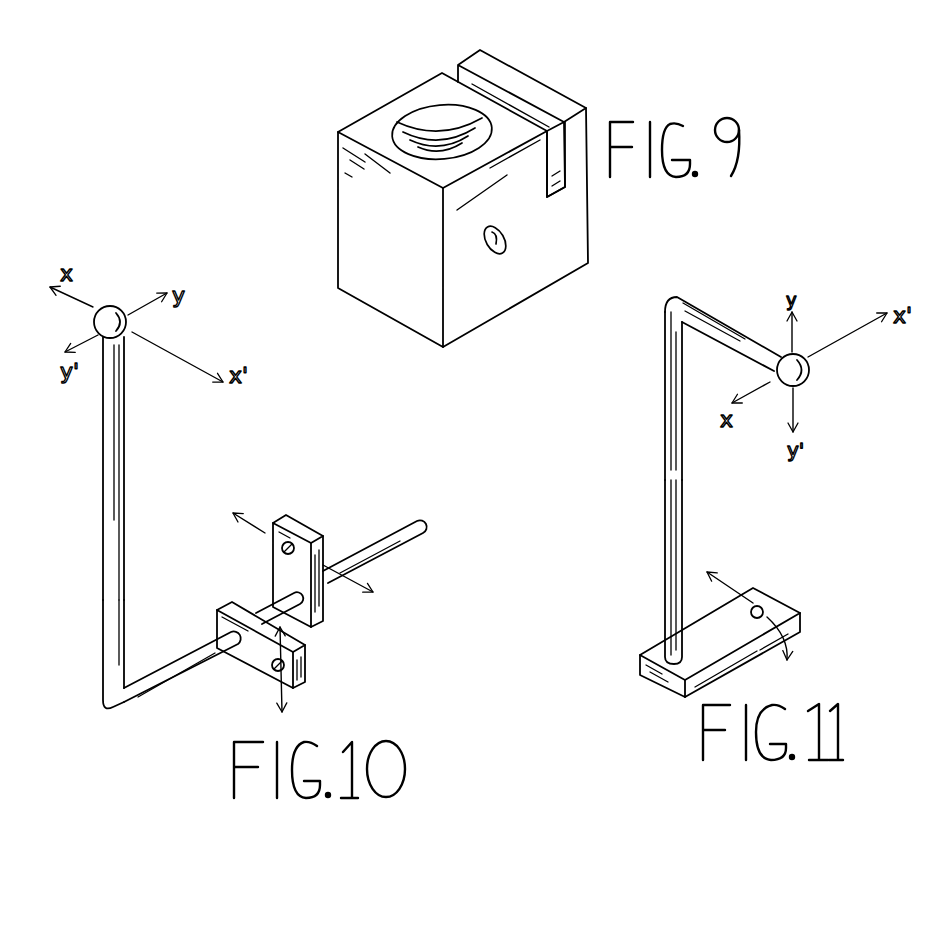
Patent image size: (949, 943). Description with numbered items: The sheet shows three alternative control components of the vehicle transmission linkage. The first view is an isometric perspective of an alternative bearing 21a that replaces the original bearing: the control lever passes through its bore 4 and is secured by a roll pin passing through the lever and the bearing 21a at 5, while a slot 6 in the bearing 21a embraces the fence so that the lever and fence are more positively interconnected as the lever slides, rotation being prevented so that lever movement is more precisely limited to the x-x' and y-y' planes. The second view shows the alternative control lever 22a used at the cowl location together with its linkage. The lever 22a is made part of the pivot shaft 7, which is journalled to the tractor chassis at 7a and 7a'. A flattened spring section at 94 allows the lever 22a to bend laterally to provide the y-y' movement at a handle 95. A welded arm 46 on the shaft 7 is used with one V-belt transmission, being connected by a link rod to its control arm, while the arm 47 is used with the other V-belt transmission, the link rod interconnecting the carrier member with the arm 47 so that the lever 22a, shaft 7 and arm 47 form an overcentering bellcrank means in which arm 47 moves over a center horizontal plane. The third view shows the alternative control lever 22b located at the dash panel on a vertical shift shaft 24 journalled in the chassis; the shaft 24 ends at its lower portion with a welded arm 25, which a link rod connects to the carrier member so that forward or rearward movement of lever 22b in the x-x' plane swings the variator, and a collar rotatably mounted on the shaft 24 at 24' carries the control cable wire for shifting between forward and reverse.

In FIG. 9, the bore 4 is at (440, 146).
In FIG. 9, the roll pin location 5 is at (507, 233).
In FIG. 9, the slot 6 is at (552, 157).
In FIG. 9, the alternative bearing 21a is at (563, 240).
In FIG. 10, the handle 95 is at (130, 320).
In FIG. 10, the alternative control lever 22a is at (117, 405).
In FIG. 10, the flattened spring section 94 is at (114, 623).
In FIG. 10, the journal location 7a is at (182, 666).
In FIG. 10, the pivot shaft 7 is at (222, 652).
In FIG. 10, the welded arm 46 is at (292, 515).
In FIG. 10, the journal location 7a' is at (375, 546).
In FIG. 10, the arm 47 is at (308, 678).
In FIG. 11, the alternative control lever 22b is at (738, 332).
In FIG. 11, the vertical shift shaft 24 is at (646, 396).
In FIG. 11, the collar location 24' is at (713, 566).
In FIG. 11, the welded arm 25 is at (790, 607).